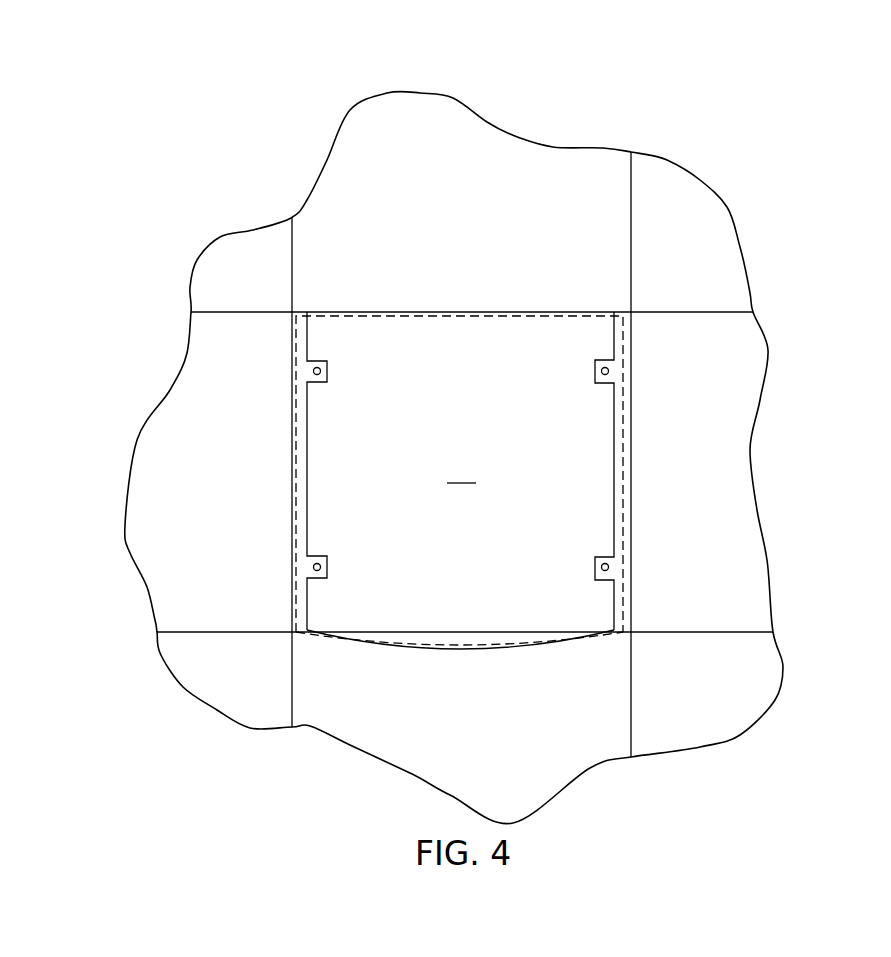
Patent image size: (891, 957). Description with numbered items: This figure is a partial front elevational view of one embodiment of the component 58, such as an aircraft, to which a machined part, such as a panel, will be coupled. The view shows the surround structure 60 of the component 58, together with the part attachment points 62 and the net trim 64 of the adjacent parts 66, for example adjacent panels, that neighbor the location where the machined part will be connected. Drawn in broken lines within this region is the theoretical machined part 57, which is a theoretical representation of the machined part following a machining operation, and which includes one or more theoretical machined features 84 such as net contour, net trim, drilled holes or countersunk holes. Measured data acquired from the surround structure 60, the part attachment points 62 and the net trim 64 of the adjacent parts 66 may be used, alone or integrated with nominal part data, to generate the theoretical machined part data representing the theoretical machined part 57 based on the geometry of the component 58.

The theoretical machined part 57 is at (461, 472).
The component 58 is at (479, 444).
The surround structure 60 is at (770, 603).
The part attachment points 62 is at (307, 372).
The net trim 64 is at (462, 480).
The adjacent parts 66 is at (520, 165).
The theoretical machined features 84 is at (434, 656).